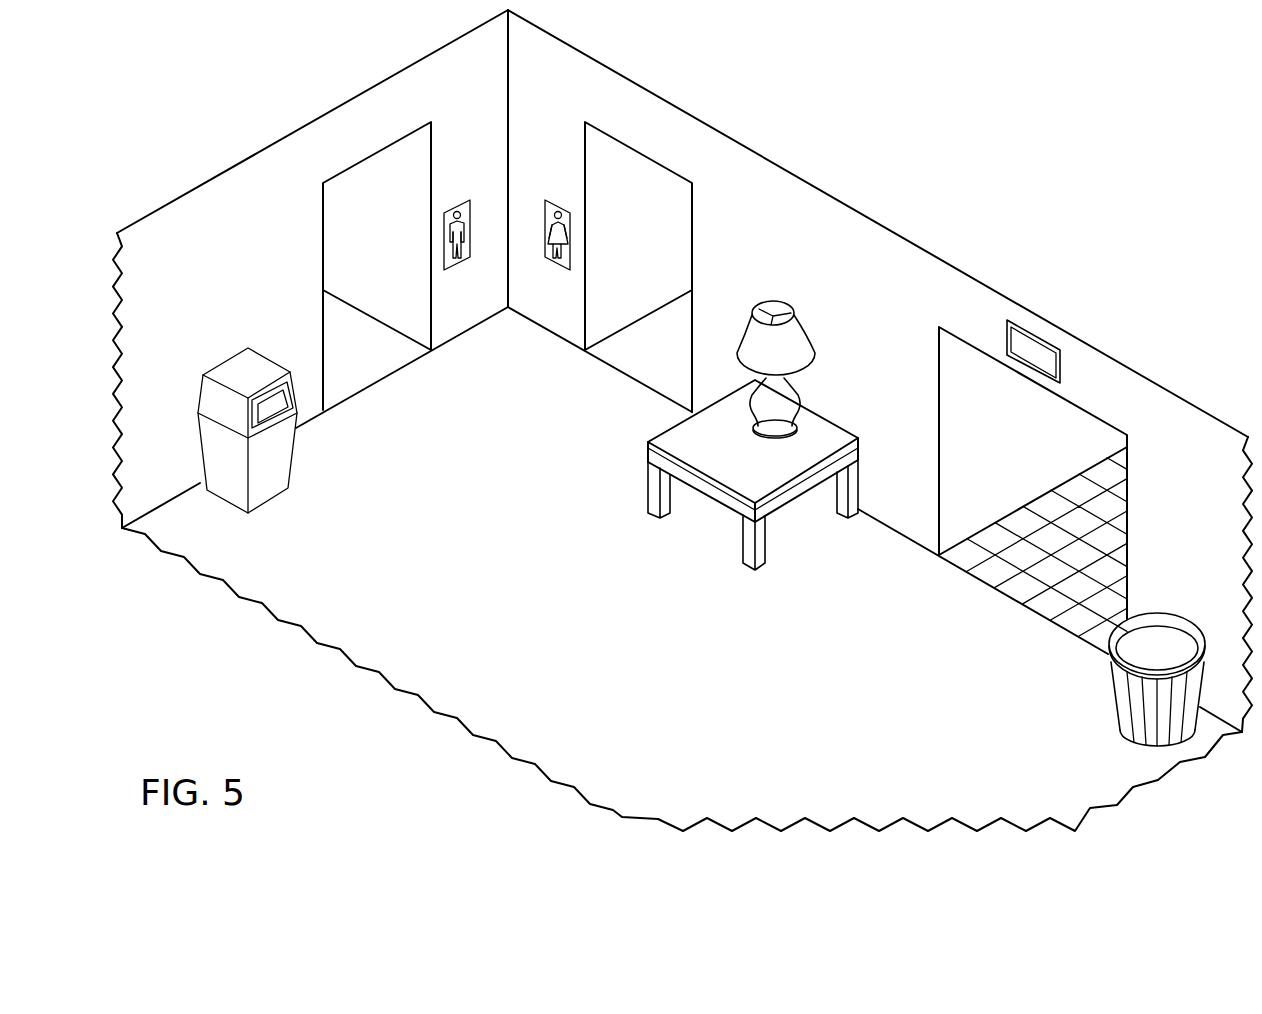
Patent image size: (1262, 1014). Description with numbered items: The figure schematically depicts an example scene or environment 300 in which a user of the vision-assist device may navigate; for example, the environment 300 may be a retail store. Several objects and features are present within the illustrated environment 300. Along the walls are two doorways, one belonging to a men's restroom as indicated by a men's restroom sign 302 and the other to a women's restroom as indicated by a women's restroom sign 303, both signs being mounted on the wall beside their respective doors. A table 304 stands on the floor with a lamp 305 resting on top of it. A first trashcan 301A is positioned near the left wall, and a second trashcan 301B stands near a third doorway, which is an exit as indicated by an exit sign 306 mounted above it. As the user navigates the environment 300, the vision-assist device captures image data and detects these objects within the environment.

The environment 300 is at (229, 190).
The first trashcan 301A is at (230, 369).
The second trashcan 301B is at (1113, 693).
The men's restroom sign 302 is at (459, 185).
The women's restroom sign 303 is at (556, 182).
The table 304 is at (843, 408).
The lamp 305 is at (745, 286).
The exit sign 306 is at (1050, 322).